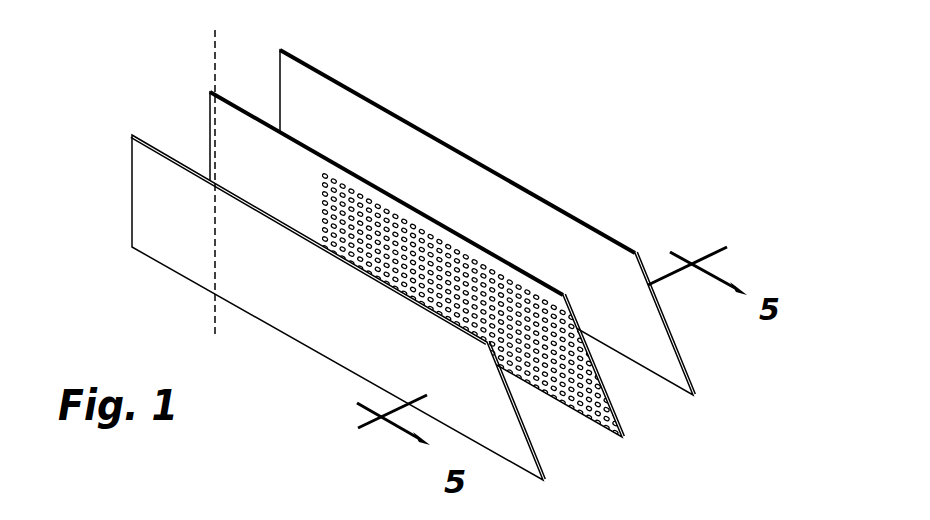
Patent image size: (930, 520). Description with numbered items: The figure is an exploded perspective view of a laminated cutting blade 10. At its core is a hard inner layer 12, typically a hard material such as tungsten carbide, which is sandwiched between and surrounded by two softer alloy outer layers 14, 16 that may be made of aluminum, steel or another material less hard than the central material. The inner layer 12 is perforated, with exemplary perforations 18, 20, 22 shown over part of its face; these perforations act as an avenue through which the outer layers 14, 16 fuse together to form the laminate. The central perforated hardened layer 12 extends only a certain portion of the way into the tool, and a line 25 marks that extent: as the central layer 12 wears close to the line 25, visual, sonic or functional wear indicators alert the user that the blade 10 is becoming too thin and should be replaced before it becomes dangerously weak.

The cutting blade 10 is at (378, 253).
The hard inner layer 12 is at (587, 253).
The outer layer 14 is at (488, 168).
The outer layer 16 is at (180, 257).
The perforation 18 is at (325, 173).
The perforation 20 is at (340, 177).
The perforation 22 is at (357, 176).
The line 25 is at (215, 169).